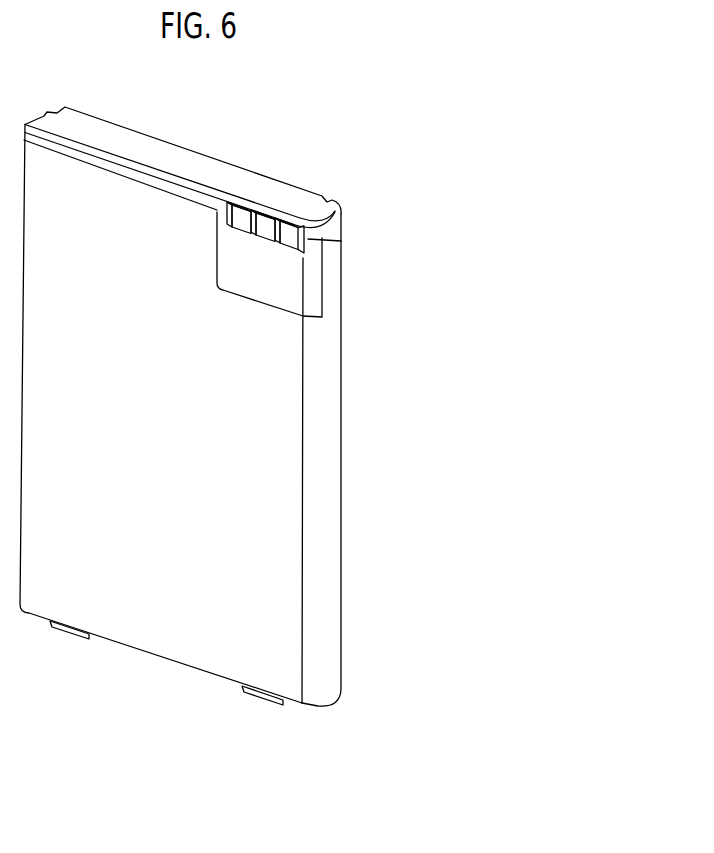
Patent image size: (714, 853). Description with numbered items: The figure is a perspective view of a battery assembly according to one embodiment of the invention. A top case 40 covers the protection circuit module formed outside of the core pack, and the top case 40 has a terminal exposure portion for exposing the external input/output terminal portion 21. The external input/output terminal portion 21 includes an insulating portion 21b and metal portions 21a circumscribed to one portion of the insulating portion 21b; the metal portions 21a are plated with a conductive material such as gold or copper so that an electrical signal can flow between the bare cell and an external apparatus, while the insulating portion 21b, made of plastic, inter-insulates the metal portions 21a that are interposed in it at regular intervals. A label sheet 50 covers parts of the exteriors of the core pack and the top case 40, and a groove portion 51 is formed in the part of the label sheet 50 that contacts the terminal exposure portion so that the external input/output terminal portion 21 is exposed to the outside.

The top case 40 is at (177, 147).
The external input/output terminal portion 21 is at (287, 185).
The metal portion 21a is at (288, 238).
The insulating portion 21b is at (272, 221).
The label sheet 50 is at (333, 475).
The groove portion 51 is at (323, 253).